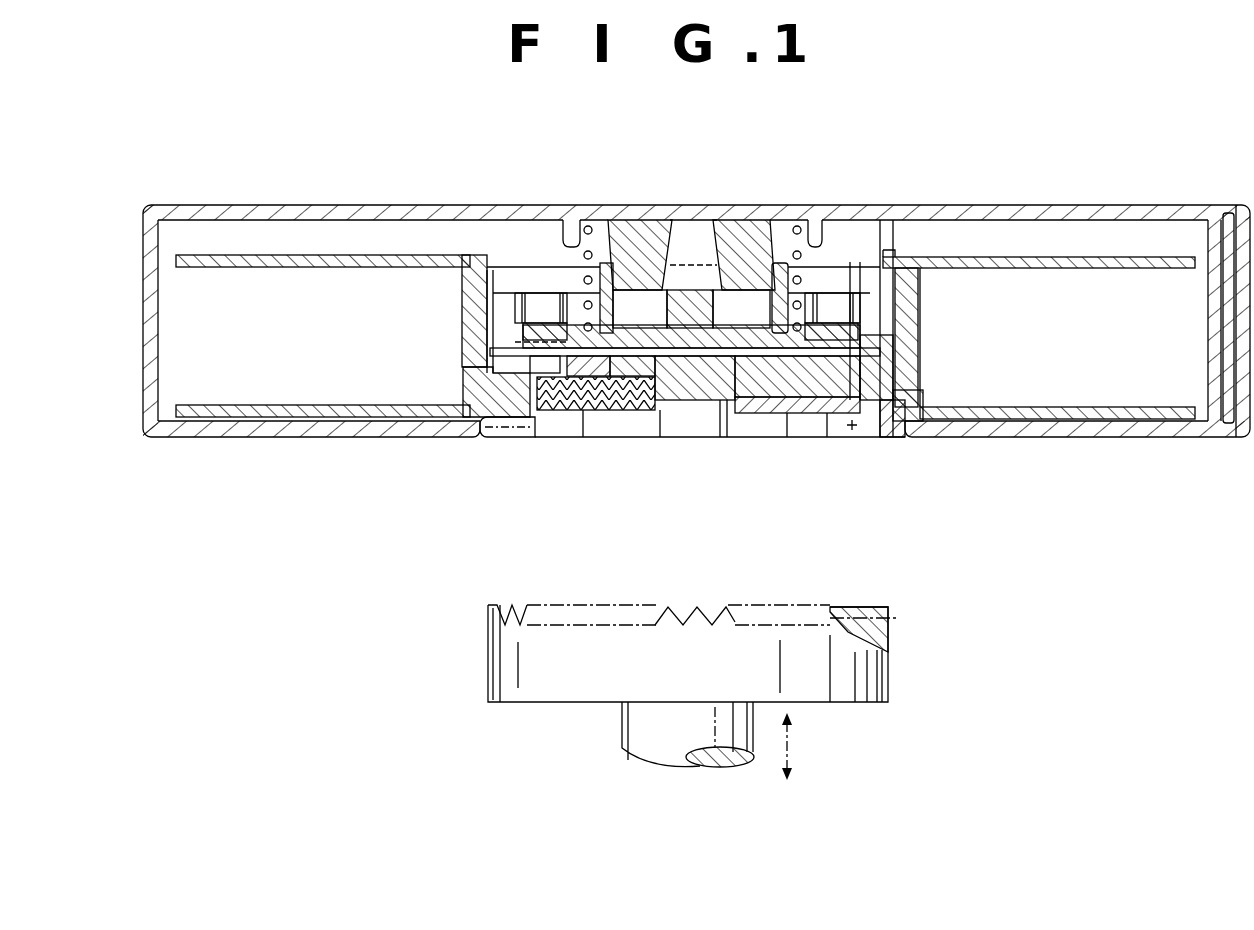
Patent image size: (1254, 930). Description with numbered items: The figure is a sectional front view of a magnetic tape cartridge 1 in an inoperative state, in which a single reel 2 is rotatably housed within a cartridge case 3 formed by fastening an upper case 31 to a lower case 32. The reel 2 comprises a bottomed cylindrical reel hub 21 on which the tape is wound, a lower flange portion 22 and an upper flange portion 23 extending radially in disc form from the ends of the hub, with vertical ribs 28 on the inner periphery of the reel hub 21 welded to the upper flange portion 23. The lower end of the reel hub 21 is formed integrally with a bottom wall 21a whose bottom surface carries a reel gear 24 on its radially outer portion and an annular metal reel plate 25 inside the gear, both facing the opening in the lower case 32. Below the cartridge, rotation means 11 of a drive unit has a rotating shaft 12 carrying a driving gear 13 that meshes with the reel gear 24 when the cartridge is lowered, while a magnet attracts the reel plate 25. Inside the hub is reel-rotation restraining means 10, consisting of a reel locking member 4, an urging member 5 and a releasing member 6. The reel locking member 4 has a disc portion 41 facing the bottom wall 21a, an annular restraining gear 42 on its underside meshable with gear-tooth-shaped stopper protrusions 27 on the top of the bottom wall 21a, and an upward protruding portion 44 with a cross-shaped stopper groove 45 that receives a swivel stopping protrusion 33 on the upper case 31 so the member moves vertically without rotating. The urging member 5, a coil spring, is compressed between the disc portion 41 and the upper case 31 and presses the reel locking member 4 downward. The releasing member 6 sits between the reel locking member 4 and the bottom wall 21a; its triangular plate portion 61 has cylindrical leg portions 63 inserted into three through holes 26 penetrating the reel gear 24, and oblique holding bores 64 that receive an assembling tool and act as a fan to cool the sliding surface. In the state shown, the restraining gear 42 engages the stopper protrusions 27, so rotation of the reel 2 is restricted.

The magnetic tape cartridge 1 is at (357, 153).
The reel 2 is at (391, 246).
The cartridge case 3 is at (1090, 198).
The reel locking member 4 is at (540, 310).
The urging member 5 is at (848, 262).
The releasing member 6 is at (697, 390).
The reel-rotation restraining means 10 is at (867, 278).
The rotation means 11 is at (477, 659).
The rotating shaft 12 is at (640, 740).
The driving gear 13 is at (672, 603).
The reel hub 21 is at (920, 292).
The bottom wall 21a is at (722, 437).
The lower flange portion 22 is at (1100, 408).
The upper flange portion 23 is at (1118, 270).
The reel gear 24 is at (505, 437).
The reel plate 25 is at (583, 437).
The through holes 26 is at (858, 440).
The stopper protrusions 27 is at (464, 358).
The vertical ribs 28 is at (918, 347).
The upper case 31 is at (288, 207).
The lower case 32 is at (297, 438).
The swivel stopping protrusion 33 is at (690, 242).
The disc portion 41 is at (660, 437).
The restraining gear 42 is at (462, 300).
The protruding portion 44 is at (600, 224).
The stopper groove 45 is at (750, 298).
The triangular plate portion 61 is at (827, 437).
The leg portions 63 is at (928, 395).
The holding bores 64 is at (787, 437).